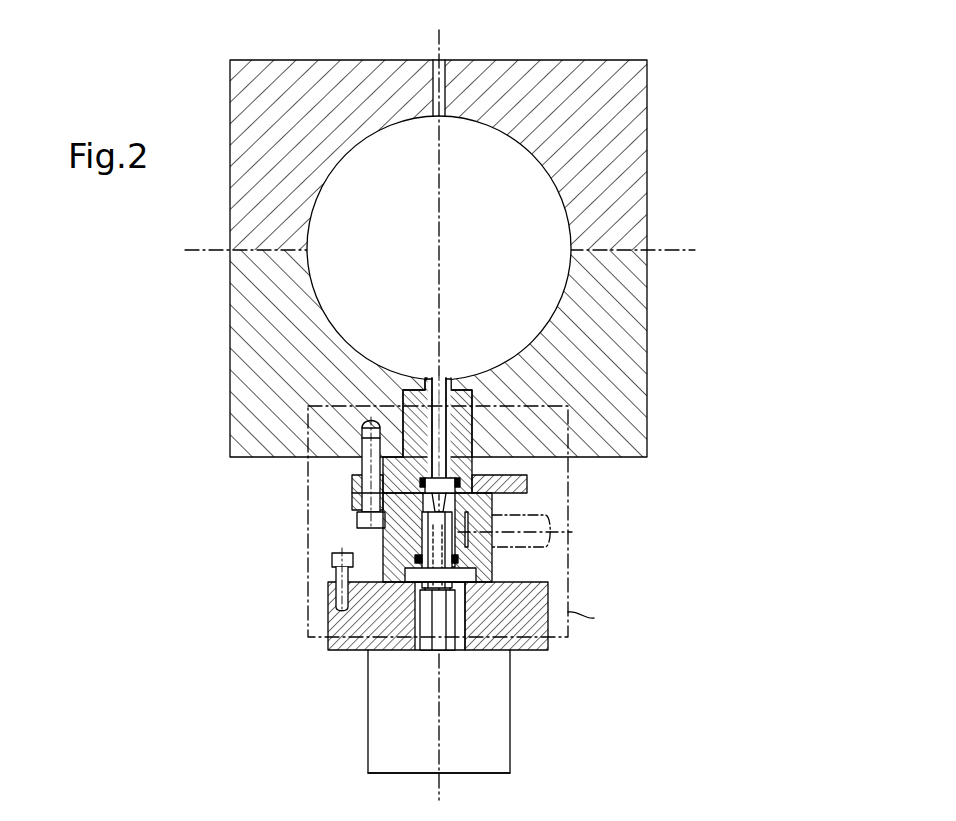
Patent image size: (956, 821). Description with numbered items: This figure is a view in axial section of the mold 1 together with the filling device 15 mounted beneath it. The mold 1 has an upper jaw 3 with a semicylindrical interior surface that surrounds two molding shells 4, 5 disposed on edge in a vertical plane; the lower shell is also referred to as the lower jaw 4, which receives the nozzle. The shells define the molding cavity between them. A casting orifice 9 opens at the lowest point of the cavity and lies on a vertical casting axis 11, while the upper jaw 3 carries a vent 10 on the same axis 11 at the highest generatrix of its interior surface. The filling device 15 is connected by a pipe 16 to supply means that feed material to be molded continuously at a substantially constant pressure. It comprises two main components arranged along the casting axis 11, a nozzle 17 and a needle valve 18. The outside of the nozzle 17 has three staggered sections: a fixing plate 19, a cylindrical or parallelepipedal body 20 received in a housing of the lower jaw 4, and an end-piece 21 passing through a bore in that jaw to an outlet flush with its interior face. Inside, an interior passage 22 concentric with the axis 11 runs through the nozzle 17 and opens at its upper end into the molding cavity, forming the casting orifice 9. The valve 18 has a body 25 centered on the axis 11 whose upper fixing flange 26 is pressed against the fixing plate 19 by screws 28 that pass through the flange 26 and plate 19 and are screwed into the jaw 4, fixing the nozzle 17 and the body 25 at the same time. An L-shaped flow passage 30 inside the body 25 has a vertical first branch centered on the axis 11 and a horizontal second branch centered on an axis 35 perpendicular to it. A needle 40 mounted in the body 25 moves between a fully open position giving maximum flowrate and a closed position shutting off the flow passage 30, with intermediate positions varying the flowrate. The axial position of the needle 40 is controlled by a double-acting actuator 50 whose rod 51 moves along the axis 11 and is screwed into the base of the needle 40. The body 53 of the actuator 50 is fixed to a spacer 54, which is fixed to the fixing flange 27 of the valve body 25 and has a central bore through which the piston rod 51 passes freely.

The mold 1 is at (693, 112).
The upper jaw 3 is at (647, 190).
The molding shell 4 is at (647, 330).
The molding shell 5 is at (391, 207).
The casting orifice 9 is at (432, 379).
The vent 10 is at (437, 62).
The casting axis 11 is at (441, 313).
The filling device 15 is at (320, 671).
The pipe 16 is at (568, 536).
The nozzle 17 is at (533, 484).
The needle valve 18 is at (376, 548).
The fixing plate 19 is at (352, 483).
The body 20 is at (403, 398).
The end-piece 21 is at (455, 380).
The interior passage 22 is at (444, 417).
The body 25 is at (438, 616).
The upper fixing flange 26 is at (352, 501).
The fixing flange 27 is at (332, 576).
The screws 28 is at (362, 441).
The flow passage 30 is at (474, 535).
The axis 35 is at (558, 528).
The needle 40 is at (416, 618).
The double-acting actuator 50 is at (361, 740).
The rod 51 is at (447, 648).
The body 53 is at (510, 762).
The spacer 54 is at (531, 650).